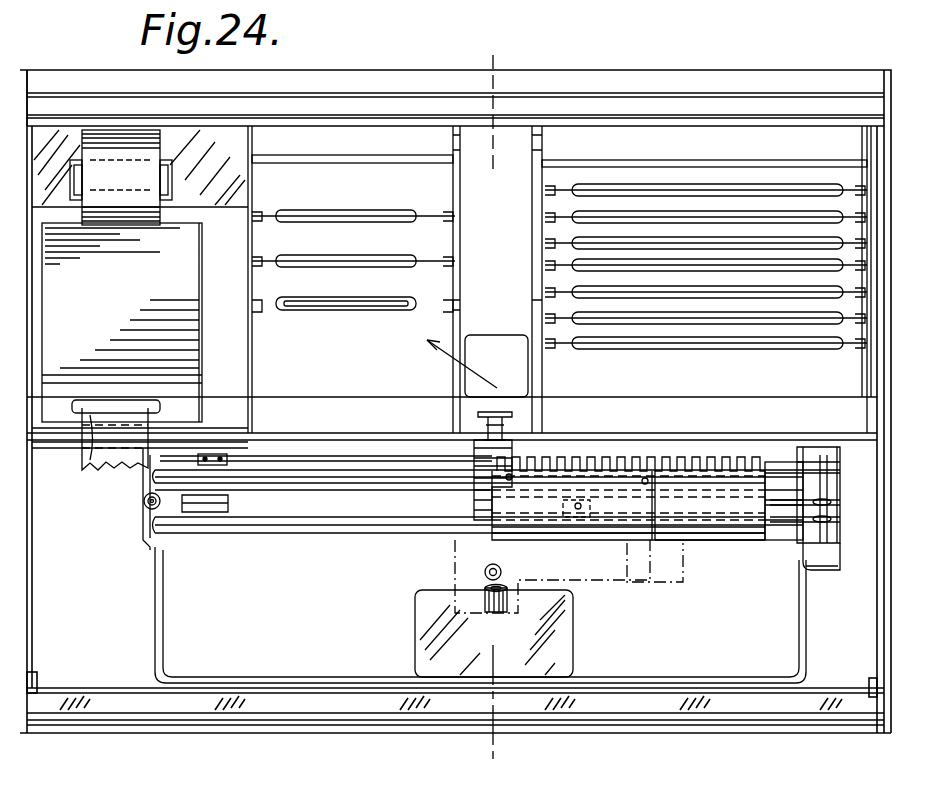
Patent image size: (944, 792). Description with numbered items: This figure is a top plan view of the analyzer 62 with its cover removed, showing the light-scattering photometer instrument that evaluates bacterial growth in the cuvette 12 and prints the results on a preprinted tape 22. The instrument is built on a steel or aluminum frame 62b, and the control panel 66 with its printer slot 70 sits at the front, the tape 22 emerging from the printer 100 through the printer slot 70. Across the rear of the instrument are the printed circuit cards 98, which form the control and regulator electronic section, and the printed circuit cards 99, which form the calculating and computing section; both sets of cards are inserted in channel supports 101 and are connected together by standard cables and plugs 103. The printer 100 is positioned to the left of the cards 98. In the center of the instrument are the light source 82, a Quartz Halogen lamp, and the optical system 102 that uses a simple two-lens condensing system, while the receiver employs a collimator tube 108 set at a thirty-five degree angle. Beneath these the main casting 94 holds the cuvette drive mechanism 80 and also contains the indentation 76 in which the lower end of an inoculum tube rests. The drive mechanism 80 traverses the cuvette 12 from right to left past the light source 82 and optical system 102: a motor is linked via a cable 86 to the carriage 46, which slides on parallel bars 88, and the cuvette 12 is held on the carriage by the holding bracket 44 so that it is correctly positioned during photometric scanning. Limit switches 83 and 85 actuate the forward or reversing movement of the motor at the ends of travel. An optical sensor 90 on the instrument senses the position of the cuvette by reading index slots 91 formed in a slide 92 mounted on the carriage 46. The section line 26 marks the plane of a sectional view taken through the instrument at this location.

The cuvette 12 is at (655, 584).
The tape 22 is at (117, 458).
The section line 26- 26 is at (430, 40).
The holding bracket 44 is at (592, 547).
The carriage 46 is at (622, 537).
The analyzer 62 is at (745, 730).
The frame 62b is at (30, 108).
The control panel 66 is at (455, 762).
The printer slot 70 is at (83, 467).
The indentation 76 is at (485, 568).
The cuvette drive mechanism 80 is at (848, 524).
The light source 82 is at (500, 358).
The limit switch 83 is at (203, 497).
The limit switch 85 is at (706, 533).
The cable 86 is at (285, 497).
The parallel bars 88 is at (330, 477).
The optical sensor 90 is at (519, 459).
The index slots 91 is at (598, 468).
The slide 92 is at (700, 480).
The main casting 94 is at (335, 642).
The printed circuit cards 98 is at (398, 258).
The printed circuit cards 99 is at (715, 243).
The printer 100 is at (150, 320).
The channel supports 101 is at (548, 235).
The optical system 102 is at (525, 427).
The plugs 103 is at (352, 262).
The collimator tube 108 is at (480, 590).